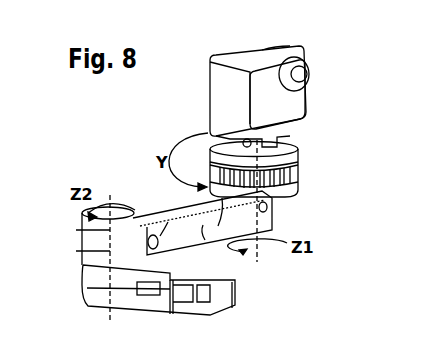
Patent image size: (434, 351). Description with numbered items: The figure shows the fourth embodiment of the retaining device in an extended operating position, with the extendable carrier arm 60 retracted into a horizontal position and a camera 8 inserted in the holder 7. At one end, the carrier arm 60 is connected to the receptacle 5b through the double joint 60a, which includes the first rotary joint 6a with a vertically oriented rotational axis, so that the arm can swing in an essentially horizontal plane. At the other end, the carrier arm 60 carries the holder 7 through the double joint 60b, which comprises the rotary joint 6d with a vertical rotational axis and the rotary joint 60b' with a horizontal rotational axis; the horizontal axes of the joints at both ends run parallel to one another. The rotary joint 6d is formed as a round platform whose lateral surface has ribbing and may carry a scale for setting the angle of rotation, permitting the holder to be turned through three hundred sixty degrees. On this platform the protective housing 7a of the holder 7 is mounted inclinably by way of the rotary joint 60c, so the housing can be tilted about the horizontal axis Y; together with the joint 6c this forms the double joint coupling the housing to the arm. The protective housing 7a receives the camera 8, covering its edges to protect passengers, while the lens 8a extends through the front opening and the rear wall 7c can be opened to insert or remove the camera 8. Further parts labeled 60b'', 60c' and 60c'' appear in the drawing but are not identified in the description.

The holder 7 is at (315, 147).
The protective housing 7a is at (284, 50).
The rear wall 7c is at (210, 95).
The camera 8 is at (264, 80).
The lens 8a is at (303, 75).
The rotary joint 6d is at (299, 167).
The carrier arm 60 is at (158, 197).
The double joint 60a is at (79, 239).
The double joint 60b is at (264, 221).
The rotary joint 60b' is at (299, 216).
The arm hole 60b'' is at (233, 213).
The rotary joint 60c is at (233, 123).
The fastening screw 60c' is at (179, 221).
The fastening screw 60c'' is at (214, 245).
The double joint part 6c is at (76, 252).
The first rotary joint 6a is at (100, 272).
The receptacle 5b is at (147, 303).